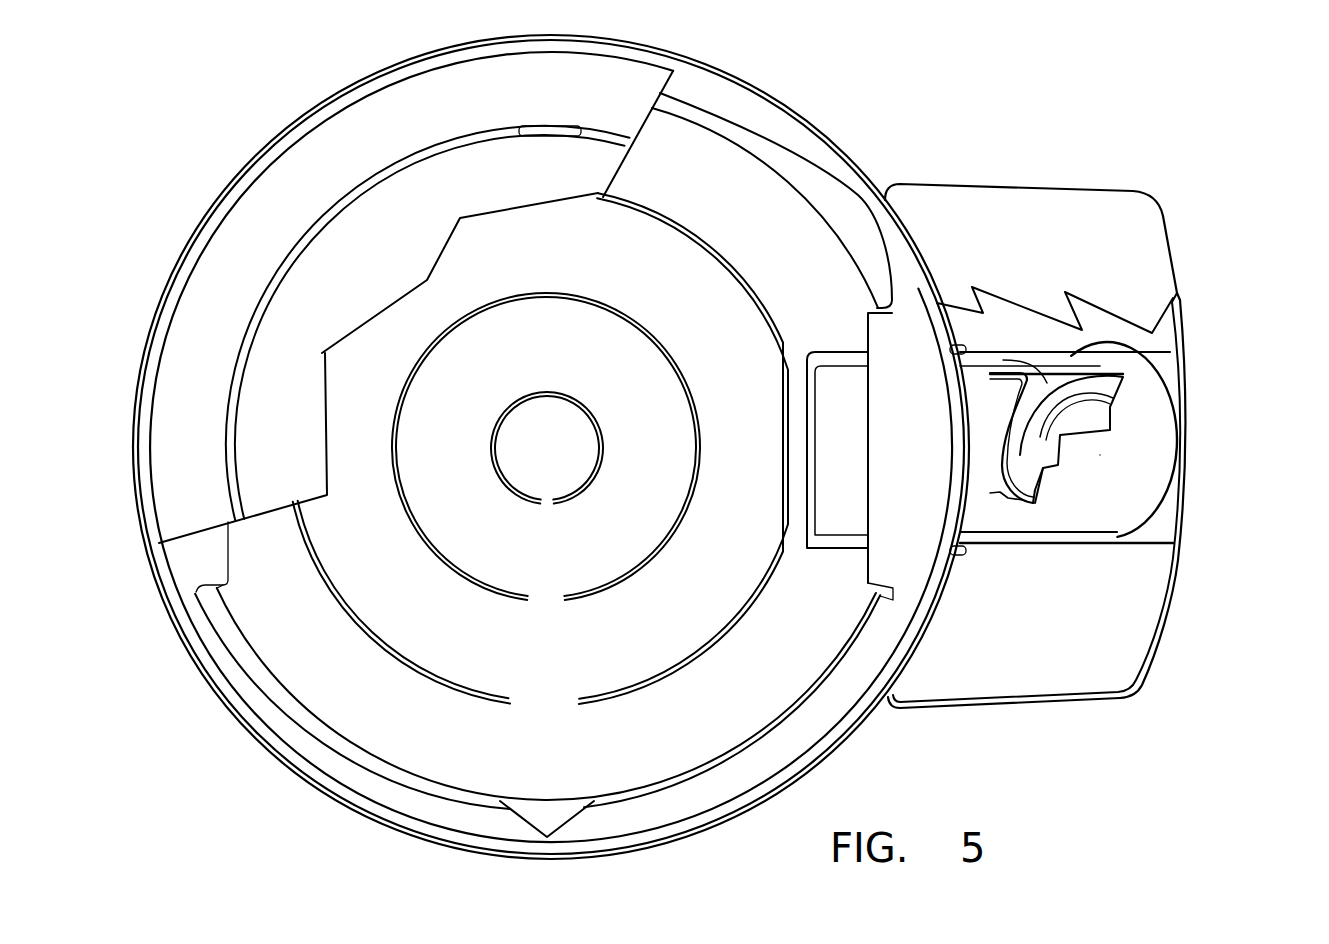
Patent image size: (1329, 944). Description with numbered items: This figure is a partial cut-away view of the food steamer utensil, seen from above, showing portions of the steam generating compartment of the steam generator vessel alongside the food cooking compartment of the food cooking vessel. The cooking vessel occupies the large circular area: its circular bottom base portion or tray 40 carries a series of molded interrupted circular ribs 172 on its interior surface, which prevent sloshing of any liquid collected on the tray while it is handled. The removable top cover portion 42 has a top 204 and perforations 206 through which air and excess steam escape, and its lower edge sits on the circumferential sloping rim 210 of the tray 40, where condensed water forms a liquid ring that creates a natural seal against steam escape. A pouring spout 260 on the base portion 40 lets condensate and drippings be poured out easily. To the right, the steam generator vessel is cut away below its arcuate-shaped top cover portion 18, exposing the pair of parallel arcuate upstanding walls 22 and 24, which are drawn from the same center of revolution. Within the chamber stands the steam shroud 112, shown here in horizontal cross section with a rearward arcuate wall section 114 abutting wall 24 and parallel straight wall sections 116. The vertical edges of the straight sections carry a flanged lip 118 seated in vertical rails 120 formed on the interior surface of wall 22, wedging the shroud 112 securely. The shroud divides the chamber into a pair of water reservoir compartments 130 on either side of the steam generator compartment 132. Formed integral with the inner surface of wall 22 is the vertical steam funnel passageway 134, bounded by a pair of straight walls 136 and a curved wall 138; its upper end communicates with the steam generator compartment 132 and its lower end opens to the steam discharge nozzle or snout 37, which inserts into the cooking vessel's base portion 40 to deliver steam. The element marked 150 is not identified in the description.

The top cover portion 18 is at (1088, 206).
The upstanding wall 22 is at (968, 452).
The upstanding wall 24 is at (1194, 437).
The steam discharge nozzle 37 is at (841, 437).
The bottom base portion 40 is at (335, 800).
The top cover portion 42 is at (240, 243).
The steam shroud 112 is at (1117, 463).
The arcuate wall section 114 is at (1153, 510).
The straight wall section 116 is at (1100, 352).
The flanged lip 118 is at (1000, 365).
The vertical rail 120 is at (960, 345).
The water reservoir compartment 130 is at (1122, 322).
The steam generator compartment 132 is at (1047, 383).
The steam funnel passageway 134 is at (987, 417).
The straight wall 136 is at (988, 388).
The curved wall 138 is at (1003, 473).
The bearing 150 is at (1090, 412).
The interrupted circular rib 172 is at (575, 500).
The top 204 is at (350, 150).
The perforation 206 is at (328, 222).
The sloping rim 210 is at (898, 353).
The pouring spout 260 is at (547, 817).